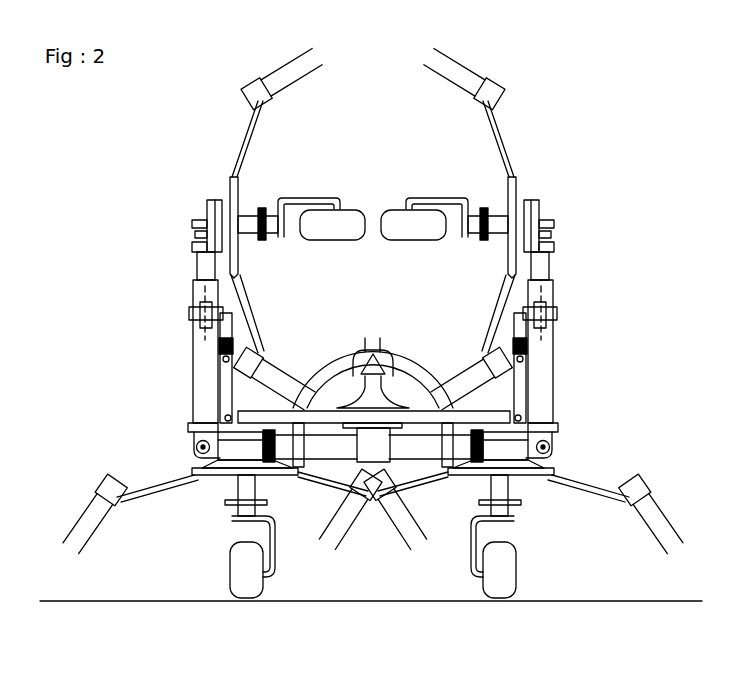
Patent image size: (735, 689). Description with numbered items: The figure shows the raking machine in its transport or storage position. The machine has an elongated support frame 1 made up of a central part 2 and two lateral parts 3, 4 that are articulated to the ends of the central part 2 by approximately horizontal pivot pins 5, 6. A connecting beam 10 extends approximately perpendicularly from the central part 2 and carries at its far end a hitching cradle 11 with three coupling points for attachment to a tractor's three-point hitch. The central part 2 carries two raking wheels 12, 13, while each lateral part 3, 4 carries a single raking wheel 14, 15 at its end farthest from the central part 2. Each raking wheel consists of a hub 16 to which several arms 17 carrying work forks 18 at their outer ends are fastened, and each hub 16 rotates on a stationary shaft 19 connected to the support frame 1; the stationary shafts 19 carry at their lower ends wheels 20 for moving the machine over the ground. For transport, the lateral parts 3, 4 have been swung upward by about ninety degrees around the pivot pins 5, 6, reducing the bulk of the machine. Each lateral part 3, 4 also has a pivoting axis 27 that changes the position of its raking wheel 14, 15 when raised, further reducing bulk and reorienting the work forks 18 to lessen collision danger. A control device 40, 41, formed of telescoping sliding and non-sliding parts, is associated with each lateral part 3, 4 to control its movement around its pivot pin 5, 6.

The support frame 1 is at (179, 337).
The central part 2 is at (205, 458).
The lateral part 3 is at (202, 348).
The lateral part 4 is at (547, 352).
The pivot pin 5 is at (198, 443).
The pivot pin 6 is at (548, 445).
The connecting beam 10 is at (395, 386).
The hitching cradle 11 is at (386, 356).
The raking wheel 12 is at (166, 480).
The raking wheel 13 is at (557, 469).
The raking wheel 14 is at (228, 187).
The raking wheel 15 is at (520, 187).
The hub 16 is at (225, 217).
The arm 17 is at (252, 124).
The work fork 18 is at (262, 78).
The stationary shaft 19 is at (248, 222).
The wheel 20 is at (328, 233).
The pivoting axis 27 is at (208, 294).
The control device 40 is at (232, 334).
The control device 41 is at (518, 390).